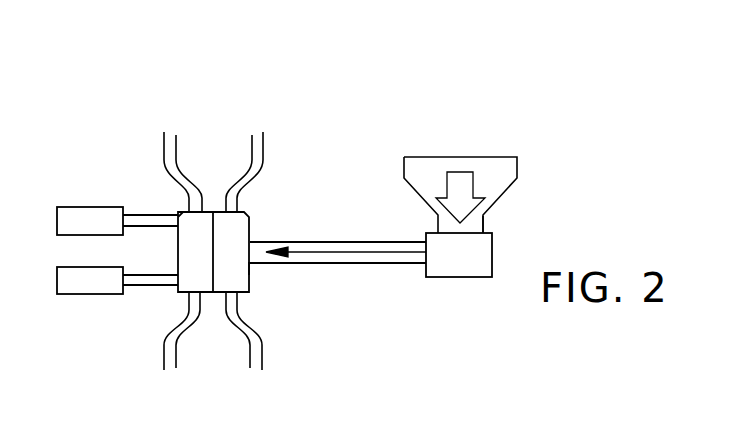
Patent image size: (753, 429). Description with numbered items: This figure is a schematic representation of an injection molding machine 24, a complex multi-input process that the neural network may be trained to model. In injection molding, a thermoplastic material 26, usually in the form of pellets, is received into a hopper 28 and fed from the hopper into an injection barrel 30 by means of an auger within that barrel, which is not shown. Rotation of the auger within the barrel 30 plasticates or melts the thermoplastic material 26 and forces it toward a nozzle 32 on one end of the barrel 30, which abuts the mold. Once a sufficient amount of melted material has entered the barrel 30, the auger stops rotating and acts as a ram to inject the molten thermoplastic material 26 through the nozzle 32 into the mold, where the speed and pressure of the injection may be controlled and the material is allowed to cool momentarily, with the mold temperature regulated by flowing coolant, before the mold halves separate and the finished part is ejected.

The injection molding machine 24 is at (380, 101).
The thermoplastic material 26 is at (483, 216).
The hopper 28 is at (511, 182).
The injection barrel 30 is at (345, 265).
The nozzle 32 is at (254, 270).